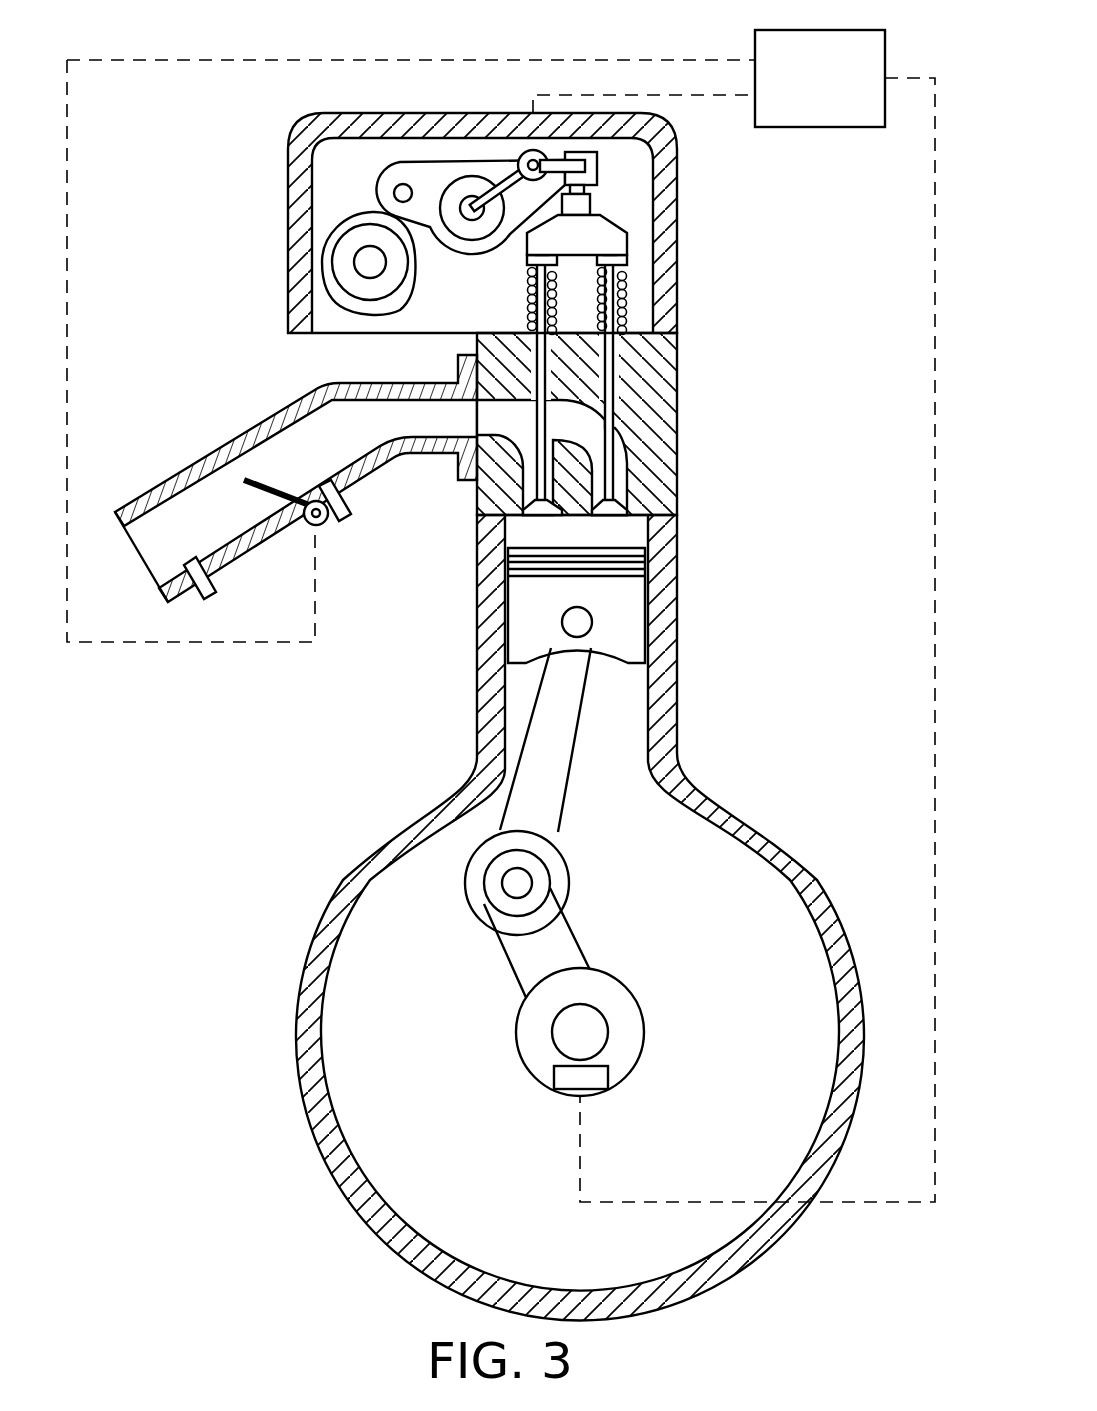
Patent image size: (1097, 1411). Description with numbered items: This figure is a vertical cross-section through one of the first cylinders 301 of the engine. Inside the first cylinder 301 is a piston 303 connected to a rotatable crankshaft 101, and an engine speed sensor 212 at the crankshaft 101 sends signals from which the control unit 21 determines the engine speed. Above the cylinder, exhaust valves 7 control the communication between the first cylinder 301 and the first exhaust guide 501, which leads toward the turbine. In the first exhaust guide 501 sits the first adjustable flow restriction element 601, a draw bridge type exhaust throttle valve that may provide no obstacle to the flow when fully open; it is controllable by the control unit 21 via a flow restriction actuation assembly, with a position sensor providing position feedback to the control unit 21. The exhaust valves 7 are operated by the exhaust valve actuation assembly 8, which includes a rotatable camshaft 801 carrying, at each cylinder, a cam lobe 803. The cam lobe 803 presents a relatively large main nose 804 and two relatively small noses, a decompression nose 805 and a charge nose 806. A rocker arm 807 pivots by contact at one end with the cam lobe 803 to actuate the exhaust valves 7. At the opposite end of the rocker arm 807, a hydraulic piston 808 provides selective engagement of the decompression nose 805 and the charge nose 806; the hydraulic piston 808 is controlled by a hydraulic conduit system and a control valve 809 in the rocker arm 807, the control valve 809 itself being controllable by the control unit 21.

The exhaust valve actuation assembly 8 is at (275, 102).
The decompression nose 805 is at (356, 205).
The rocker arm 807 is at (450, 175).
The control valve 809 is at (533, 150).
The hydraulic piston 808 is at (580, 178).
The control unit 21 is at (803, 92).
The charge nose 806 is at (328, 226).
The cam lobe 803 is at (317, 252).
The camshaft 801 is at (354, 262).
The main nose 804 is at (387, 313).
The exhaust valves 7 is at (548, 368).
The first exhaust guide 501 is at (183, 468).
The first adjustable flow restriction element 601 is at (273, 493).
The piston 303 is at (618, 617).
The first cylinder 301 is at (632, 740).
The crankshaft 101 is at (552, 1033).
The engine speed sensor 212 is at (553, 1077).